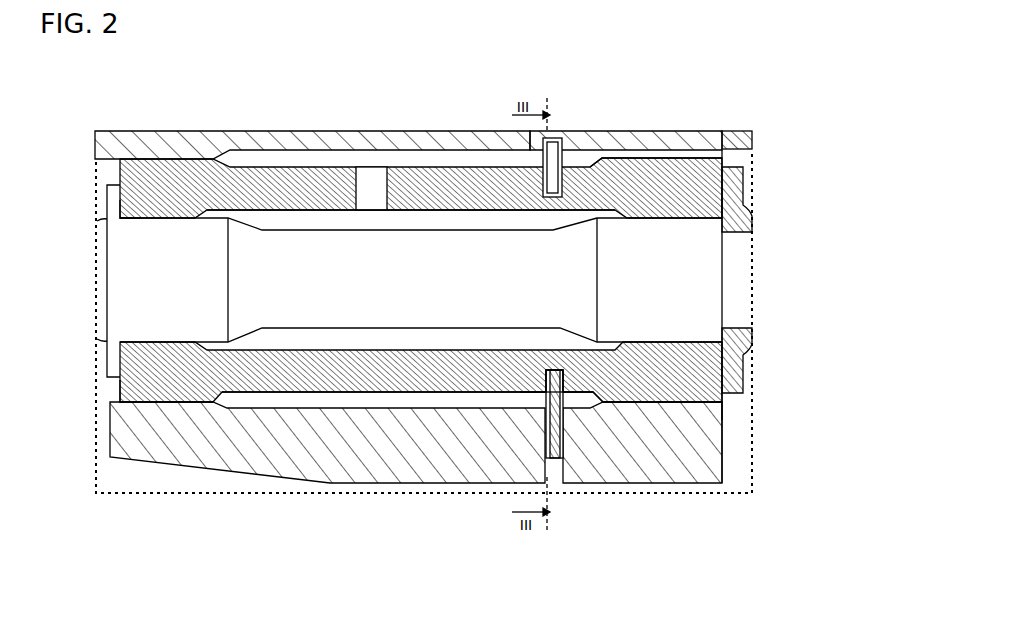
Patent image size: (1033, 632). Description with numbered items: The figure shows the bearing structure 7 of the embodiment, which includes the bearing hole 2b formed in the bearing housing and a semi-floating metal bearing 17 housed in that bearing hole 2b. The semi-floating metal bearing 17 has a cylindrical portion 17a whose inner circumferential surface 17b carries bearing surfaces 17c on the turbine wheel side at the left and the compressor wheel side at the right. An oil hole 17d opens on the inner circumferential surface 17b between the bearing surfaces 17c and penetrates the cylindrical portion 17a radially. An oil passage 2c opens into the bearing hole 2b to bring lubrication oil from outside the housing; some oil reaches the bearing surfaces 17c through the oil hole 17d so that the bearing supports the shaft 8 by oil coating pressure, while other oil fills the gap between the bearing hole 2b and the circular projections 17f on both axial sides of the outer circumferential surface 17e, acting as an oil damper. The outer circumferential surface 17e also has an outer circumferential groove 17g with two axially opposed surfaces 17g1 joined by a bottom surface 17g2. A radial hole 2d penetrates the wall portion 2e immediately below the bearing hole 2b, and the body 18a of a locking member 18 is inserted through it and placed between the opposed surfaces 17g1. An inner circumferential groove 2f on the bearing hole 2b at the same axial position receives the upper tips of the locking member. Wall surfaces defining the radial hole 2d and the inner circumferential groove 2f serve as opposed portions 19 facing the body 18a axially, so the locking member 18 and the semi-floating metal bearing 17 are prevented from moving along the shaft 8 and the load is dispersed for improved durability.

The bearing structure 7 is at (72, 104).
The semi-floating metal bearing 17 is at (409, 269).
The cylindrical portion 17a is at (243, 156).
The inner circumferential surface 17b is at (430, 214).
The bearing surfaces 17c is at (147, 222).
The oil hole 17d is at (378, 190).
The outer circumferential surface 17e is at (262, 393).
The circular projections 17f is at (140, 405).
The outer circumferential groove 17g is at (468, 577).
The opposed surfaces 17g1 is at (548, 394).
The bottom surface 17g2 is at (562, 394).
The bearing hole 2b is at (285, 155).
The oil passage 2c is at (494, 144).
The radial hole 2d is at (545, 440).
The wall portion 2e is at (218, 472).
The inner circumferential groove 2f is at (528, 126).
The opposed portion 19 is at (562, 140).
The locking member 18 is at (652, 111).
The body 18a is at (596, 158).
The shaft 8 is at (318, 329).